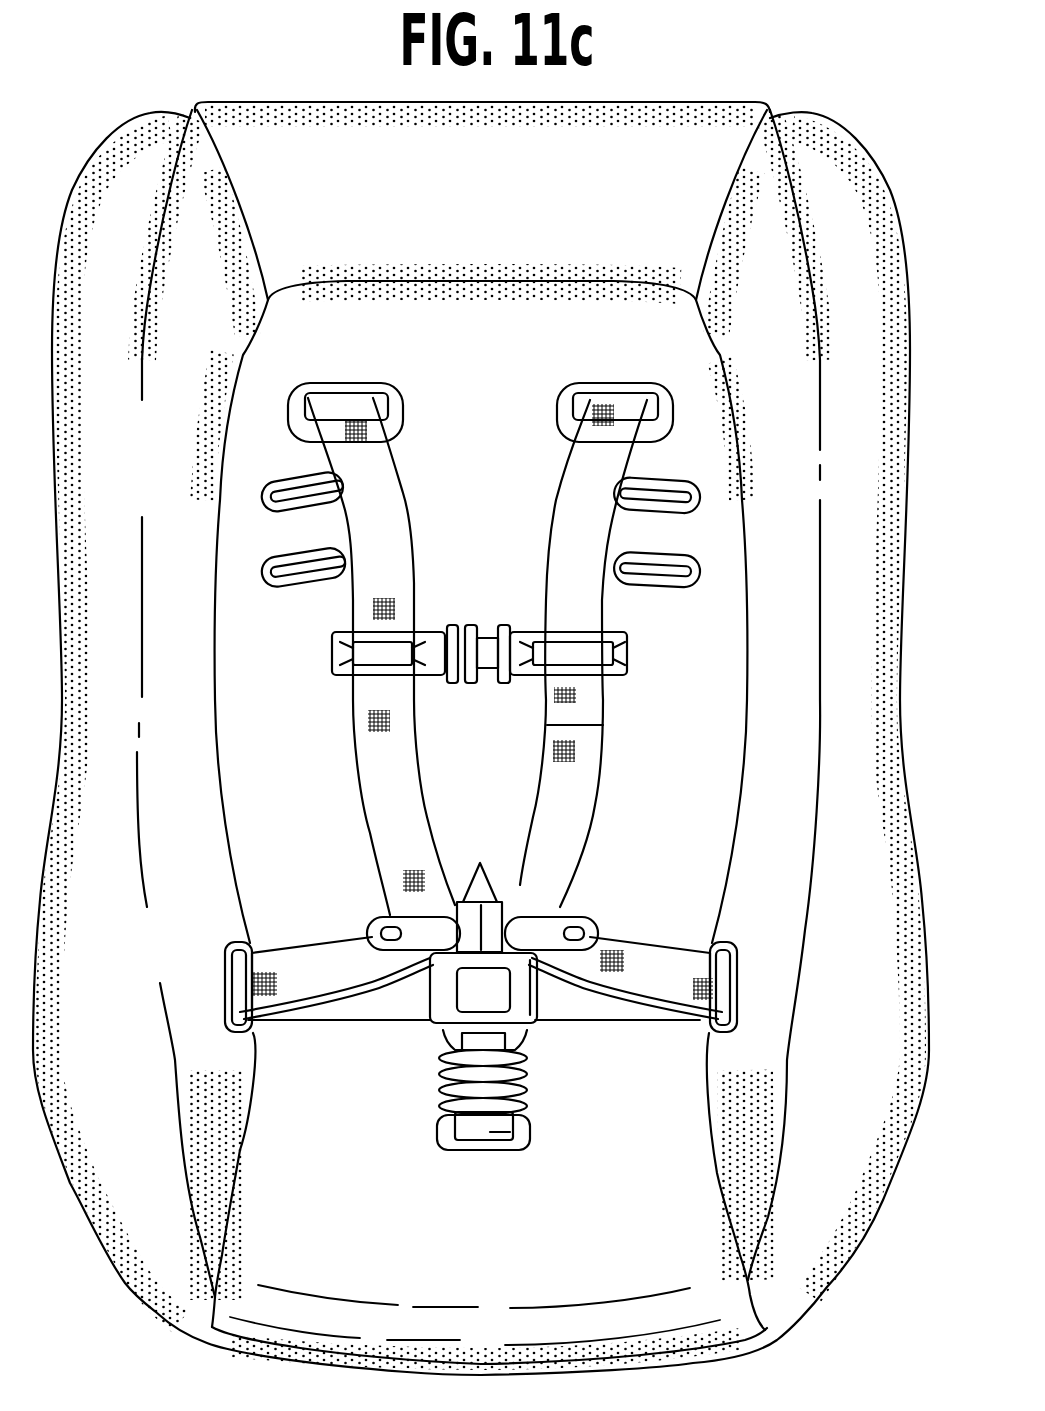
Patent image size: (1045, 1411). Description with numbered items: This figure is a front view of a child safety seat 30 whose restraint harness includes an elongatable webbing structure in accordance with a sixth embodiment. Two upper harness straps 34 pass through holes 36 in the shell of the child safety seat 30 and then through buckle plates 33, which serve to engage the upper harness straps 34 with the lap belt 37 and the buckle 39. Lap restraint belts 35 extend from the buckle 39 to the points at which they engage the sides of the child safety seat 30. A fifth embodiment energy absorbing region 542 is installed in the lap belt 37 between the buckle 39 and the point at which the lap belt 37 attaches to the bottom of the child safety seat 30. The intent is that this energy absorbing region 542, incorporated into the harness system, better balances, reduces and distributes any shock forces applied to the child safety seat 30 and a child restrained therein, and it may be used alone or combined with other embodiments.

The child safety seat 30 is at (803, 98).
The buckle plates 33 is at (479, 884).
The upper harness straps 34 is at (575, 428).
The lap restraint belts 35 is at (658, 950).
The holes 36 is at (562, 392).
The lap belt 37 is at (530, 1140).
The buckle 39 is at (530, 1013).
The energy absorbing region 542 is at (520, 1085).